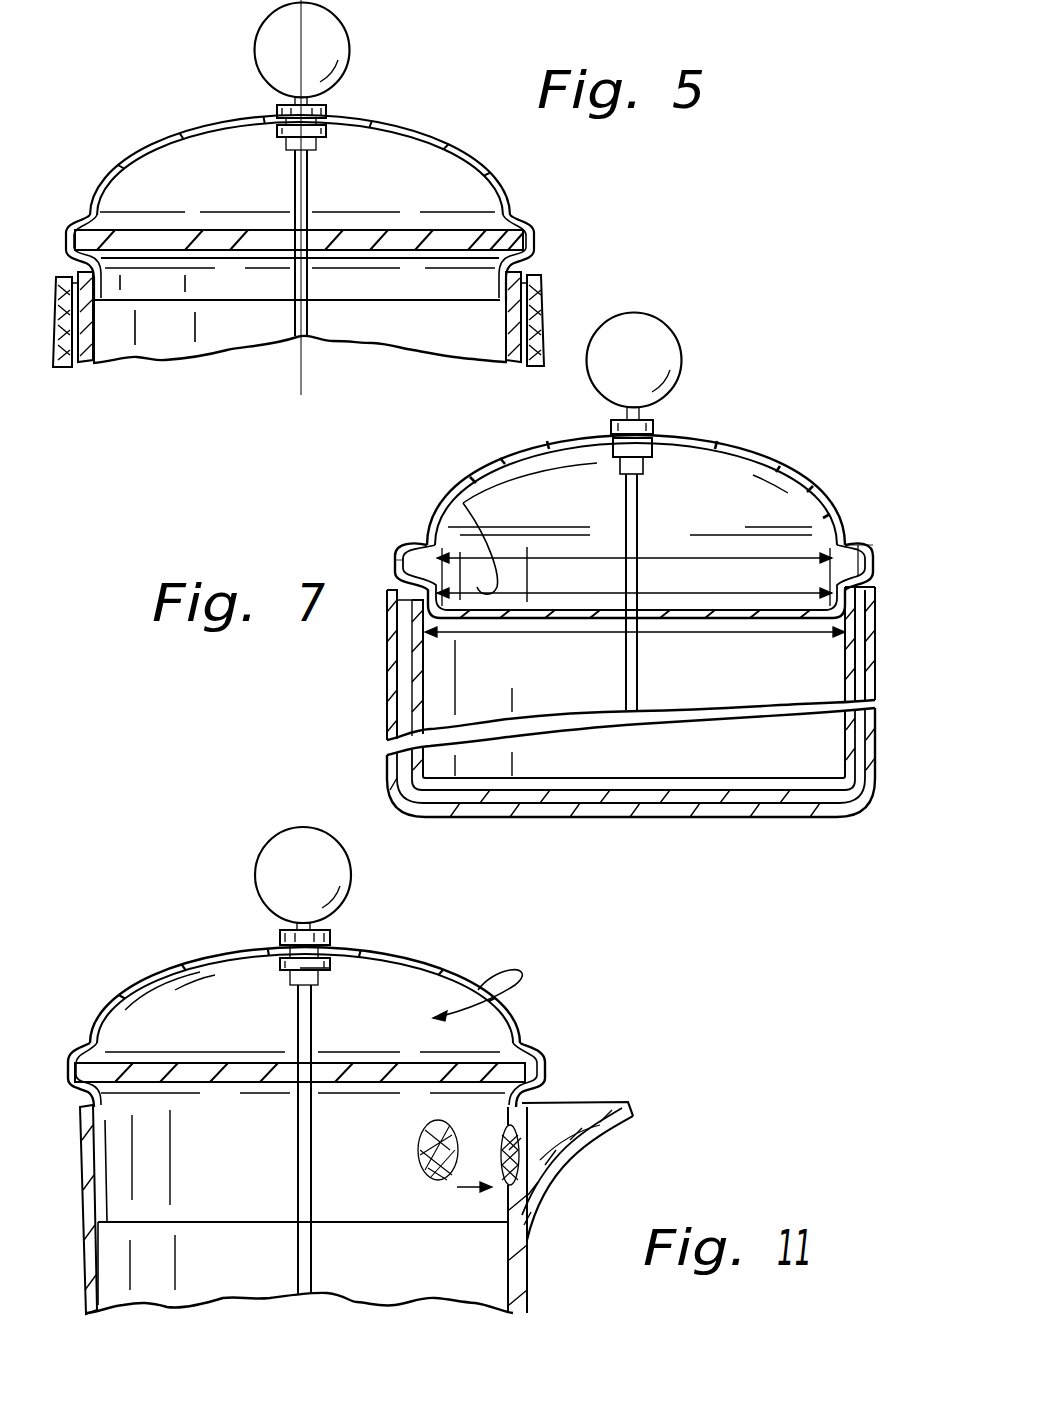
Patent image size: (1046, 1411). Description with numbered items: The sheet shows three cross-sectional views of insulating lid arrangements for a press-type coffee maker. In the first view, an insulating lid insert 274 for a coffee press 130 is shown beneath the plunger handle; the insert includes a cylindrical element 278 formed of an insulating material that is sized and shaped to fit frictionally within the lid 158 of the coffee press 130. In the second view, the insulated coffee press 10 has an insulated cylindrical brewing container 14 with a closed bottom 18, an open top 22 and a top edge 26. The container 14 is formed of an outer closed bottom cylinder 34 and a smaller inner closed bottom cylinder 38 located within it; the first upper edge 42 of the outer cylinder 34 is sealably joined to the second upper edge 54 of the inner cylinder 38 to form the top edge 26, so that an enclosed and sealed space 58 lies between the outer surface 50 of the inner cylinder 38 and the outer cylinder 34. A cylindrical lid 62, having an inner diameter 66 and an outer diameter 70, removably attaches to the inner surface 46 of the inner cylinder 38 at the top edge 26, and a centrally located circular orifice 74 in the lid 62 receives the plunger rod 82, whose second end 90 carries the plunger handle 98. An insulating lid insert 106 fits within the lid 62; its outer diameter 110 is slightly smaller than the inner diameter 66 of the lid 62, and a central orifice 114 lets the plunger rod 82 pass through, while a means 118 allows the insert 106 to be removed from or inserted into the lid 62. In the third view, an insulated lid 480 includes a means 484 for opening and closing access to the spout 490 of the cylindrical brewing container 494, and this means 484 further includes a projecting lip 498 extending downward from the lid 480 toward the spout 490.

In FIG. 5, the lid 158 is at (430, 132).
In FIG. 5, the cylindrical element 278 is at (416, 240).
In FIG. 5, the insulating lid insert 274 is at (481, 236).
In FIG. 5, the coffee press 130 is at (567, 304).
In FIG. 7, the plunger handle 98 is at (647, 373).
In FIG. 7, the second end 90 is at (662, 409).
In FIG. 7, the circular orifice 74 is at (650, 478).
In FIG. 7, the cylindrical lid 62 is at (785, 457).
In FIG. 7, the insulating lid insert 106 is at (490, 468).
In FIG. 7, the outer diameter 110 is at (440, 503).
In FIG. 7, the inner diameter 66 is at (430, 548).
In FIG. 7, the outer diameter 70 is at (553, 620).
In FIG. 7, the plunger rod 82 is at (658, 526).
In FIG. 7, the second upper edge 54 is at (858, 545).
In FIG. 7, the first upper edge 42 is at (879, 526).
In FIG. 7, the open top 22 is at (395, 583).
In FIG. 7, the top edge 26 is at (390, 592).
In FIG. 7, the central orifice 114 is at (655, 600).
In FIG. 7, the insulated coffee press 10 is at (877, 641).
In FIG. 7, the insulated cylindrical brewing container 14 is at (875, 678).
In FIG. 7, the inner surface 46 is at (432, 678).
In FIG. 7, the outer surface 50 is at (405, 700).
In FIG. 7, the enclosed and sealed space 58 is at (388, 727).
In FIG. 7, the means for removing or inserting 118 is at (511, 618).
In FIG. 7, the outer closed bottom cylinder 34 is at (875, 766).
In FIG. 7, the inner closed bottom cylinder 38 is at (845, 766).
In FIG. 7, the closed bottom 18 is at (668, 776).
In FIG. 11, the insulated lid 480 is at (436, 960).
In FIG. 11, the projecting lip 498 is at (195, 1202).
In FIG. 11, the cylindrical brewing container 494 is at (527, 1262).
In FIG. 11, the spout 490 is at (615, 1110).
In FIG. 11, the means for opening and closing access to the spout 484 is at (520, 1150).